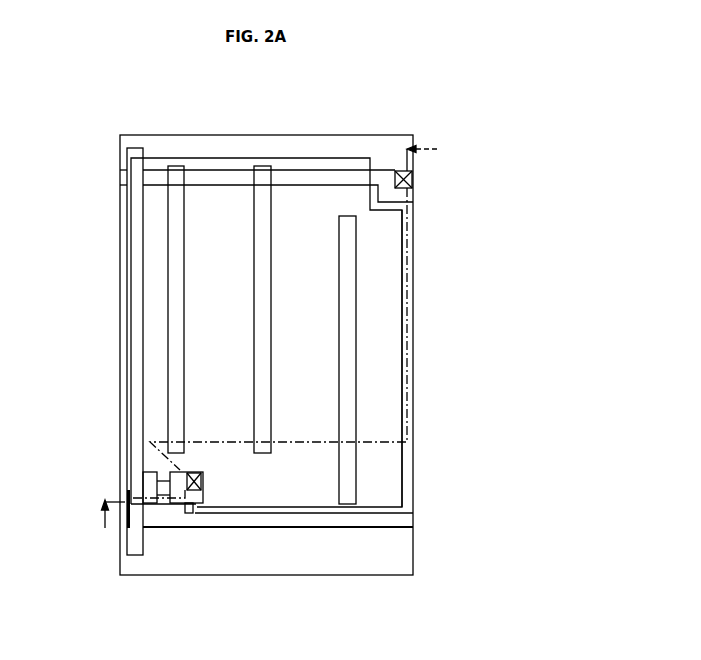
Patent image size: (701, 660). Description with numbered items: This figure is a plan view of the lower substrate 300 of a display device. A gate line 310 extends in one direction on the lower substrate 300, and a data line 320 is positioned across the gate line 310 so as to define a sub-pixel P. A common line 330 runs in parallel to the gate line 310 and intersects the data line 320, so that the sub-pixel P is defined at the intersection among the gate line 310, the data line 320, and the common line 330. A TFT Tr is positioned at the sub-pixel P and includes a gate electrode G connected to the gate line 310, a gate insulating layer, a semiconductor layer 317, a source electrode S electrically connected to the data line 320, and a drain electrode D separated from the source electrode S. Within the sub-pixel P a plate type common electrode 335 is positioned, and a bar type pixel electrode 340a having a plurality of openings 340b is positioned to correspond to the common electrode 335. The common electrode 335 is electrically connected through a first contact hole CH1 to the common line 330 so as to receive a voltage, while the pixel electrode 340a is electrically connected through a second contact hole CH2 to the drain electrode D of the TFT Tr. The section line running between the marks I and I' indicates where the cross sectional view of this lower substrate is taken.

The lower substrate 300 is at (413, 549).
The gate line 310 is at (313, 523).
The semiconductor layer 317 is at (176, 520).
The data line 320 is at (133, 540).
The common line 330 is at (387, 177).
The common electrode 335 is at (231, 148).
The pixel electrode 340a is at (385, 326).
The openings 340b is at (352, 278).
The first contact hole CH1 is at (412, 179).
The second contact hole CH2 is at (203, 481).
The TFT Tr is at (110, 457).
The source electrode S is at (148, 487).
The gate electrode G is at (163, 482).
The drain electrode D is at (190, 478).
The sub-pixel P is at (232, 278).
The section line I-I' I is at (248, 360).
The section line I- I' is at (430, 156).